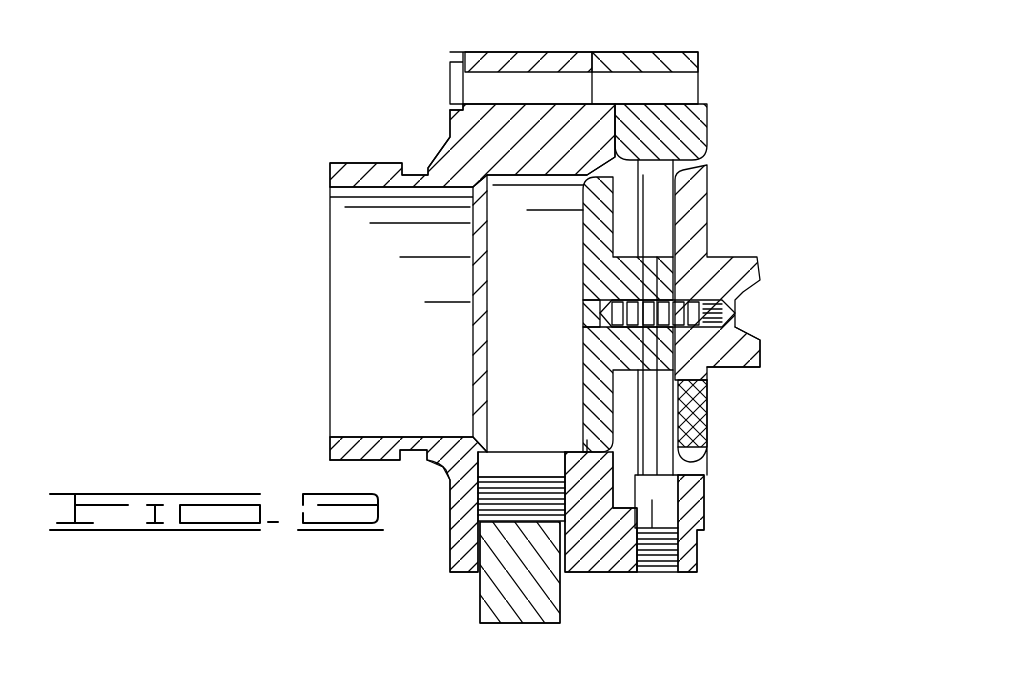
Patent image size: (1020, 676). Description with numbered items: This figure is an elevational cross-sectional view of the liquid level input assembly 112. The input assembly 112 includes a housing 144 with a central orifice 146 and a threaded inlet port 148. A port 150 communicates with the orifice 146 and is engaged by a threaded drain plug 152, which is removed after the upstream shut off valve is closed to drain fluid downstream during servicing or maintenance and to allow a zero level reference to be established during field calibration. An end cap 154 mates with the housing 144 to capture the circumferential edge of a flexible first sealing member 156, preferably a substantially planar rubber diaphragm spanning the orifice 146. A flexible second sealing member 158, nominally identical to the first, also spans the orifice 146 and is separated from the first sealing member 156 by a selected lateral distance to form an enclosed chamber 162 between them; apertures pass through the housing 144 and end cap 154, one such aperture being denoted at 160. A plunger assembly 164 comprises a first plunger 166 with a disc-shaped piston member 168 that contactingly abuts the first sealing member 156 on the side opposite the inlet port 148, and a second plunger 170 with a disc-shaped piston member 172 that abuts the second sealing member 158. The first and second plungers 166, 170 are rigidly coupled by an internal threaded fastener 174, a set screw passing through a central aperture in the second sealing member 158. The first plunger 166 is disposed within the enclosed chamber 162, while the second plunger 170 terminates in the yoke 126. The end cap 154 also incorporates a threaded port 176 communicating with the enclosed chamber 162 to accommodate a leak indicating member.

The liquid level input assembly 112 is at (340, 100).
The yoke 126 is at (757, 270).
The housing 144 is at (365, 165).
The central orifice 146 is at (378, 300).
The threaded inlet port 148 is at (392, 437).
The port 150 is at (478, 537).
The threaded drain plug 152 is at (540, 592).
The end cap 154 is at (670, 52).
The first sealing member 156 is at (583, 230).
The second sealing member 158 is at (705, 153).
The aperture 160 is at (500, 88).
The enclosed chamber 162 is at (660, 190).
The plunger assembly 164 is at (790, 228).
The first plunger 166 is at (618, 355).
The piston member 168 is at (603, 418).
The second plunger 170 is at (727, 347).
The piston member 172 is at (705, 443).
The internal threaded fastener 174 is at (703, 415).
The threaded port 176 is at (663, 572).